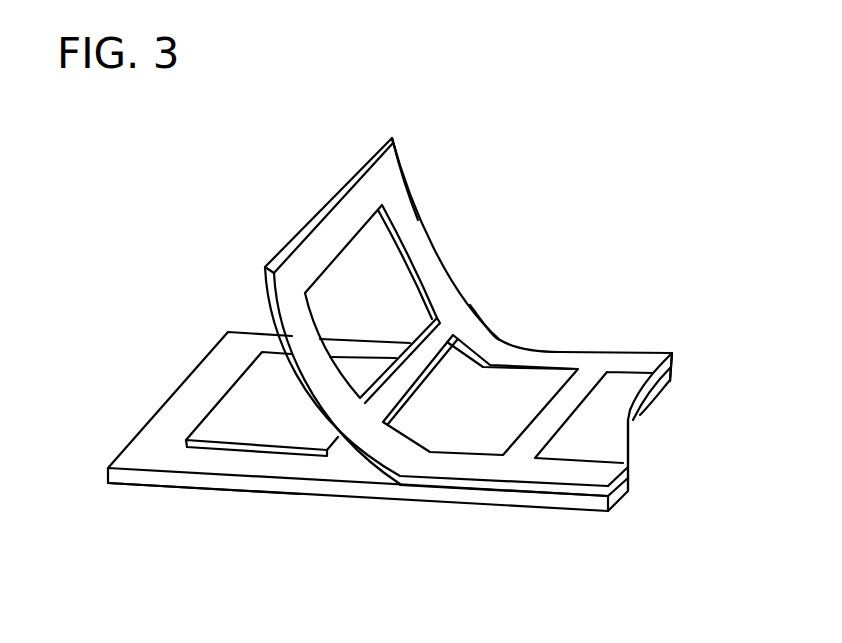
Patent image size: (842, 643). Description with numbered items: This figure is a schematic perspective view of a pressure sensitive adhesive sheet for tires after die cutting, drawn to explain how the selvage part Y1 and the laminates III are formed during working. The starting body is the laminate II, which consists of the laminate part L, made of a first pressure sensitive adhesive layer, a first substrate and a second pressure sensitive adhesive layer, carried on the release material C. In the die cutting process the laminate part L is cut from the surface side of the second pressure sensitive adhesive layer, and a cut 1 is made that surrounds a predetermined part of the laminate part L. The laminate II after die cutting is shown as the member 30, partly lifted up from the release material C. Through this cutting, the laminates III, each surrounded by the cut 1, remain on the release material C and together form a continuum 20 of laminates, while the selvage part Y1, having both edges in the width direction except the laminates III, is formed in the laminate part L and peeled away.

The cut 1 is at (478, 353).
The continuum of laminates 20 is at (134, 394).
The laminate (II) after die cutting 30 is at (613, 214).
The selvage part Y1 is at (402, 175).
The laminate II is at (685, 350).
The laminate III is at (258, 427).
The release material C is at (162, 478).
The laminate part L is at (513, 487).